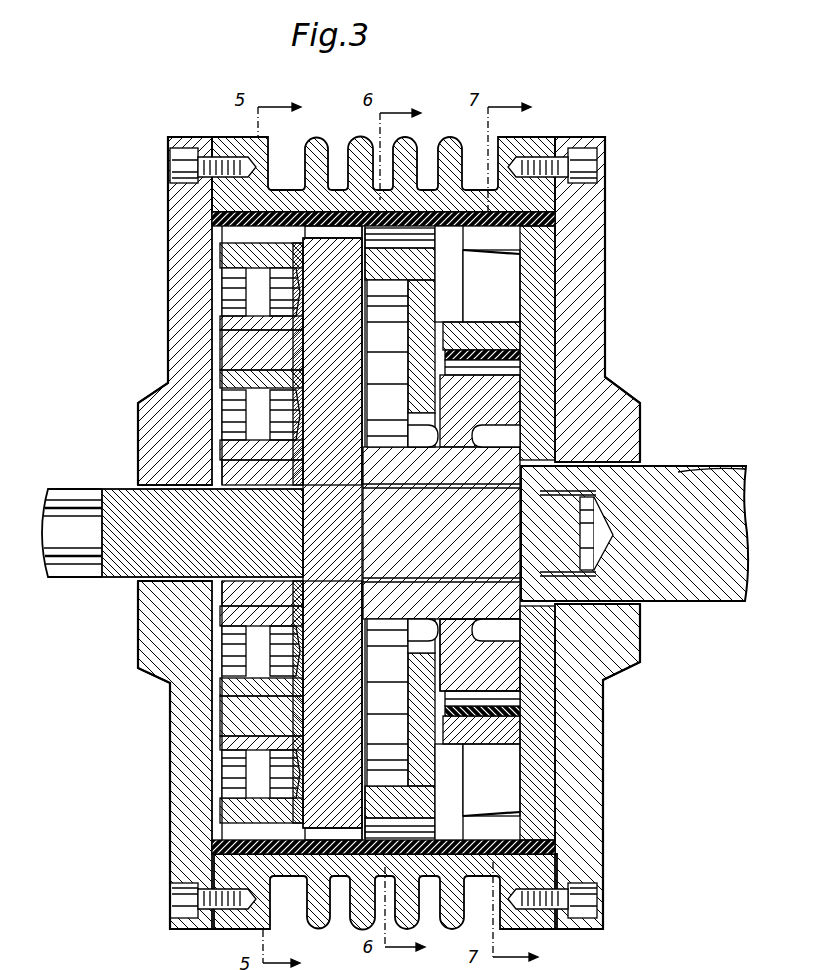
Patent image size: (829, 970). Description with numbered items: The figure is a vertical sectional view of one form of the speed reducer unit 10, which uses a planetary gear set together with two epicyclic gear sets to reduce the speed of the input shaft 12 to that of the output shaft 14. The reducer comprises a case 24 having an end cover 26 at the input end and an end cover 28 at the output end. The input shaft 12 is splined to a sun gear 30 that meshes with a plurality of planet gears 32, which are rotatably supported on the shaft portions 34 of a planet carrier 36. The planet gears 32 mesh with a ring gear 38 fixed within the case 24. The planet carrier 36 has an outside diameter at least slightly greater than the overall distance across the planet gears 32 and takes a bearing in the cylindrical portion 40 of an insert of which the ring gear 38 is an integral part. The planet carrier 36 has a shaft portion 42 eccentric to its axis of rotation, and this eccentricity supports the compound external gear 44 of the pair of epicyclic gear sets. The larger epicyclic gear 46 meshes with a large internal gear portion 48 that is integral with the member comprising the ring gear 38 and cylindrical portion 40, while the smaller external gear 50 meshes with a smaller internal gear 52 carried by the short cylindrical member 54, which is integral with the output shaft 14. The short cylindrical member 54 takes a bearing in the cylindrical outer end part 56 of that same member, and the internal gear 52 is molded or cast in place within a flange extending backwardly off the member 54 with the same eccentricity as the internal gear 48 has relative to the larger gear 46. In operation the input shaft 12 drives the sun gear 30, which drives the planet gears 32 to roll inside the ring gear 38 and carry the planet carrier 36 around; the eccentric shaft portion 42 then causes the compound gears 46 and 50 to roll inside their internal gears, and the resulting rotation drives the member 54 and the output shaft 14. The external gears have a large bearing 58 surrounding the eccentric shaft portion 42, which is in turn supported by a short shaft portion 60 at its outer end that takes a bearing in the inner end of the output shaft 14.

The rotary actuator assembly 10 is at (533, 127).
The input shaft 12 is at (88, 489).
The output shaft 14 is at (694, 463).
The case 24 is at (448, 137).
The end cover 26 is at (190, 137).
The end cover 28 is at (606, 138).
The sun gear 30 is at (250, 480).
The planet gears 32 is at (232, 422).
The shaft portions 34 is at (247, 360).
The planet carrier 36 is at (311, 358).
The ring gear 38 is at (225, 246).
The cylindrical portion 40 is at (345, 236).
The shaft portion 42 is at (412, 551).
The compound external gear 44 is at (442, 638).
The larger epicyclic gear 46 is at (424, 262).
The large internal gear portion 48 is at (430, 246).
The smaller external gear 50 is at (468, 392).
The smaller internal gear 52 is at (487, 350).
The short cylindrical member 54 is at (456, 322).
The cylindrical outer end part 56 is at (486, 244).
The large bearing 58 is at (382, 497).
The short shaft portion 60 is at (562, 535).